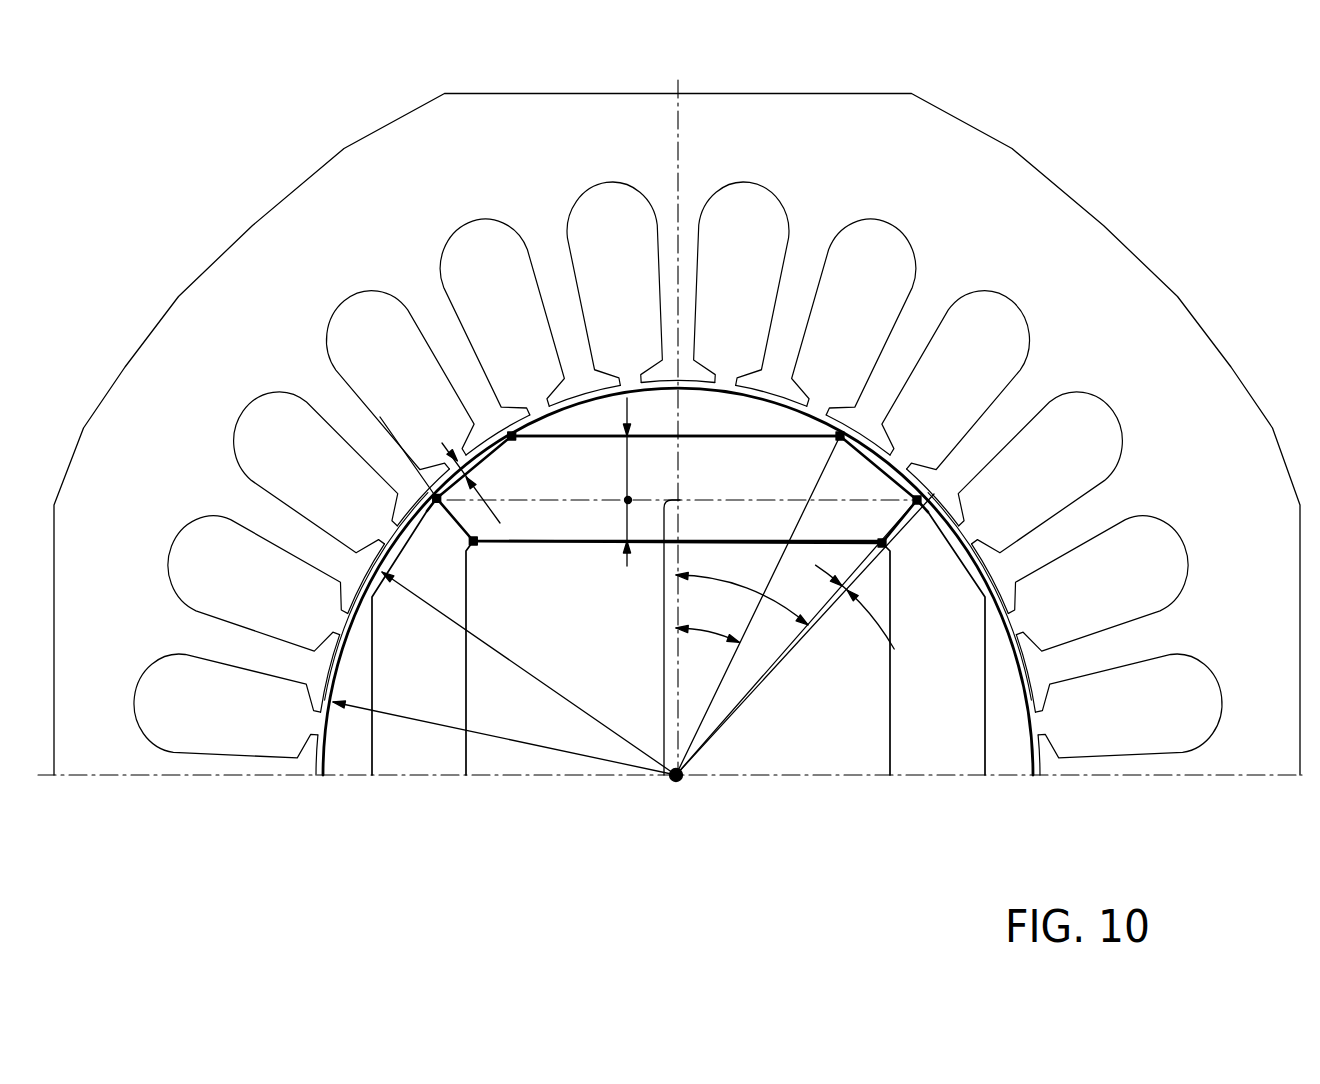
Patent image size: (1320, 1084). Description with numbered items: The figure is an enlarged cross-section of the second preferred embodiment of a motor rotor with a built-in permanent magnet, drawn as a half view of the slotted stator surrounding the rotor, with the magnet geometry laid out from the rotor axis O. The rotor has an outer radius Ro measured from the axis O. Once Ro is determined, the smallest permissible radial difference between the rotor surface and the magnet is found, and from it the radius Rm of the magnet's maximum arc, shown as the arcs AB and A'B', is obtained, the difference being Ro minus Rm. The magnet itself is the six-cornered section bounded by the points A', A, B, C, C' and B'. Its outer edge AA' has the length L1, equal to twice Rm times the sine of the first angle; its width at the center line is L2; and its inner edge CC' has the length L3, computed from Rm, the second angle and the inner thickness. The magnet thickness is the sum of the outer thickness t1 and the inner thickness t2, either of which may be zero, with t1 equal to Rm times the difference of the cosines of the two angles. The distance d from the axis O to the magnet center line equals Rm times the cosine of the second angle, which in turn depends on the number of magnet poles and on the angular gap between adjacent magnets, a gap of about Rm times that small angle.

The magnet corner point A' is at (519, 392).
The magnet corner point A is at (831, 393).
The magnet corner point B' is at (411, 473).
The magnet corner point B is at (923, 455).
The magnet corner point C' is at (510, 574).
The magnet corner point C is at (909, 571).
The rotor axis O is at (698, 802).
The length of AA' L1 is at (676, 422).
The magnet width at center line L2 is at (681, 488).
The length of CC' L3 is at (677, 525).
The outer thickness t1 is at (613, 451).
The inner thickness t2 is at (613, 533).
The distance from rotor axis to magnet center line d is at (665, 630).
The radius of the maximum arc of the magnet Rm is at (529, 673).
The outer radius of the motor rotor Ro is at (504, 734).